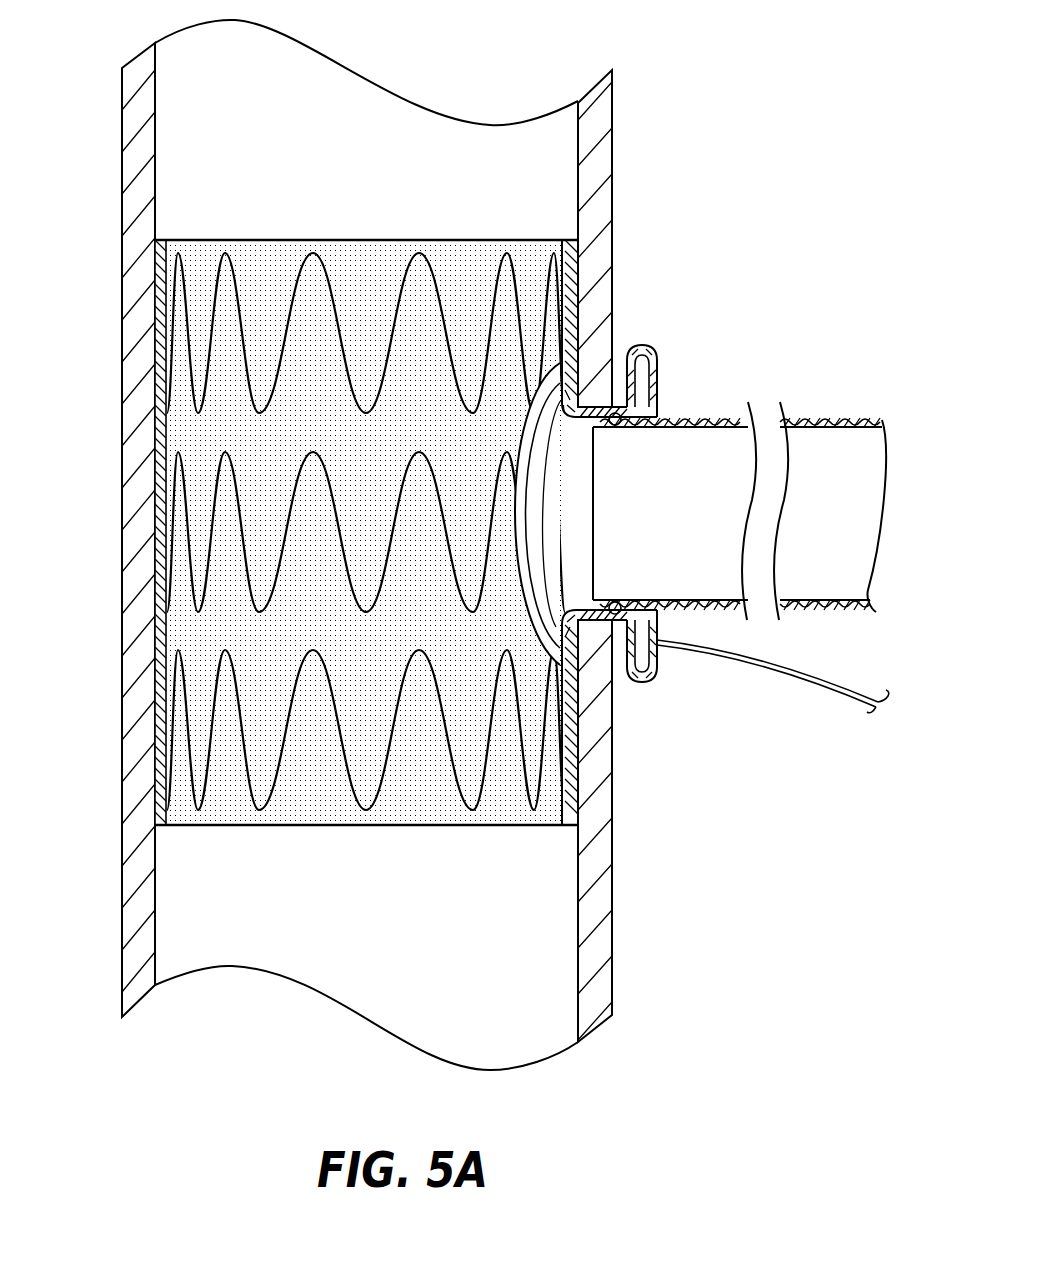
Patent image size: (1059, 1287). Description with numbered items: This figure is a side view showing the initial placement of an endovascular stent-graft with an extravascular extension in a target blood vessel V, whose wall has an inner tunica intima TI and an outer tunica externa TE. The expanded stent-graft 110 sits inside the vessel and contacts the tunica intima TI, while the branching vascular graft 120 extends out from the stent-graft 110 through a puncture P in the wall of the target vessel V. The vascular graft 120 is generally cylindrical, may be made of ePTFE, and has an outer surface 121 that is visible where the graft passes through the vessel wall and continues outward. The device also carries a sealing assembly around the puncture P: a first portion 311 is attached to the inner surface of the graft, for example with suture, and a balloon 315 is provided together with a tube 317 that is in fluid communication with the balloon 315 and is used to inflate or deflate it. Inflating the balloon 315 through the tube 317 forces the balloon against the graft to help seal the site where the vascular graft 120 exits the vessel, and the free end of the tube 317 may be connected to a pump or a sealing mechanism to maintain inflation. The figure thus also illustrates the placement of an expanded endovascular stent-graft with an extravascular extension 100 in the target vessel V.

The endovascular stent-graft 100 is at (446, 497).
The stent-graft 110 is at (352, 540).
The vascular graft 120 is at (753, 481).
The outer surface 121 is at (828, 415).
The first portion 311 is at (650, 697).
The balloon 315 is at (651, 345).
The tube 317 is at (750, 660).
The target vessel V is at (142, 62).
The tunica intima TI is at (578, 133).
The tunica externa TE is at (612, 145).
The puncture P is at (600, 348).